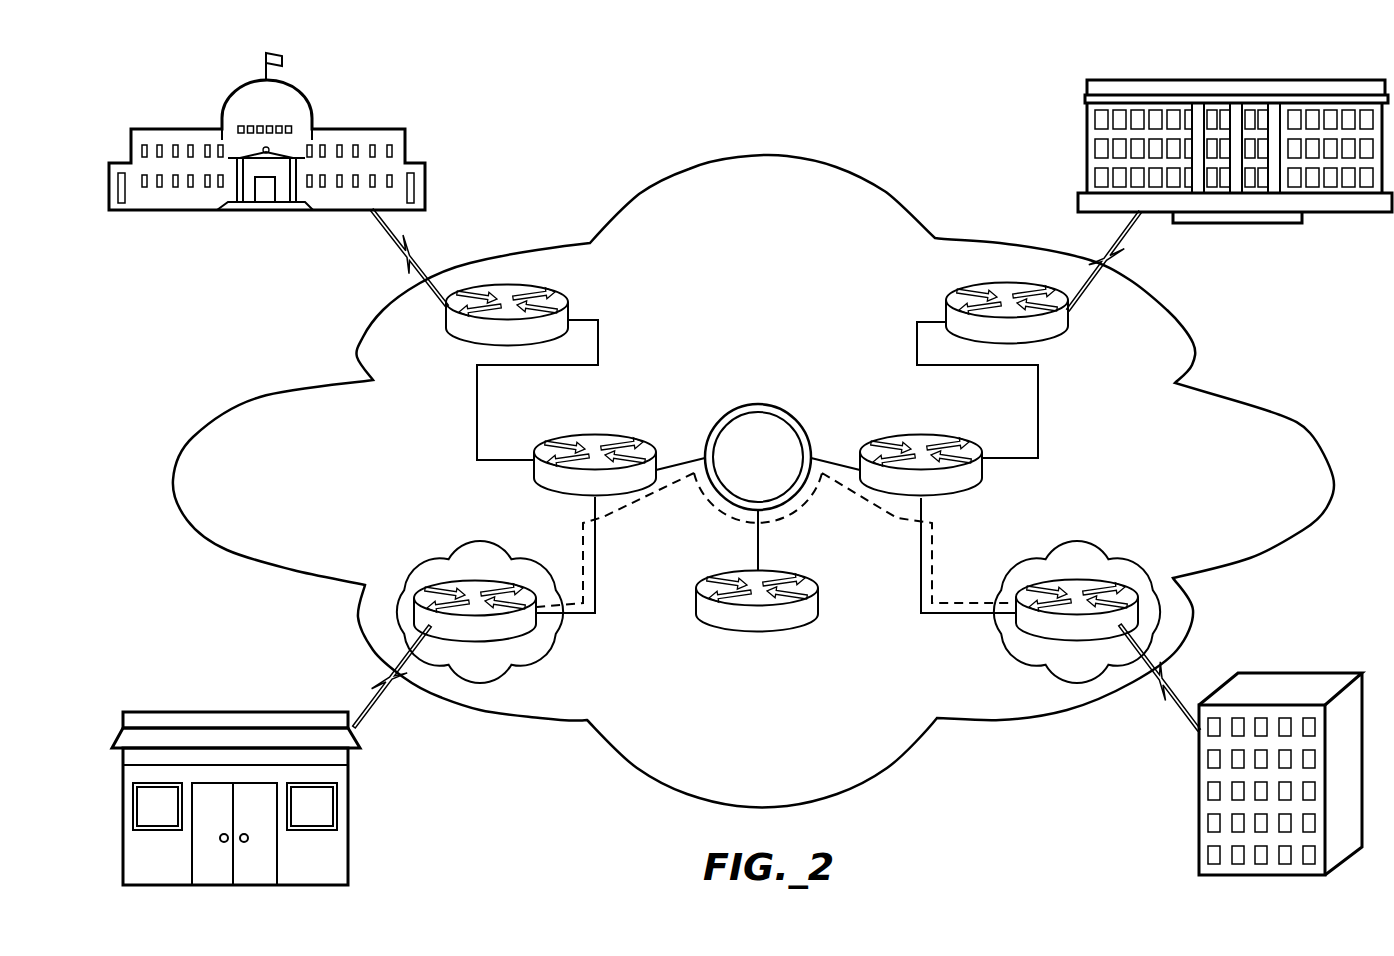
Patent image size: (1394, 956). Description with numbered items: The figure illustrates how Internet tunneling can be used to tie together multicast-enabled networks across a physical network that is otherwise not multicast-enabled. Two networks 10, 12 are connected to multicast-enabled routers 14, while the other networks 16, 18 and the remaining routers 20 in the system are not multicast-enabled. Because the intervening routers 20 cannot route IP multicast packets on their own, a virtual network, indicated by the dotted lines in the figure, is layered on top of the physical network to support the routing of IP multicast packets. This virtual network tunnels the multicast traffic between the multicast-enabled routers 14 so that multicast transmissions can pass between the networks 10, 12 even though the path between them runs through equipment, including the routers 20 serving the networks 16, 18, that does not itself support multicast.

The network 10 is at (348, 808).
The network 12 is at (1199, 808).
The multicast-enabled router 14 is at (475, 540).
The network 16 is at (272, 212).
The network 18 is at (1245, 223).
The router 20 is at (558, 288).